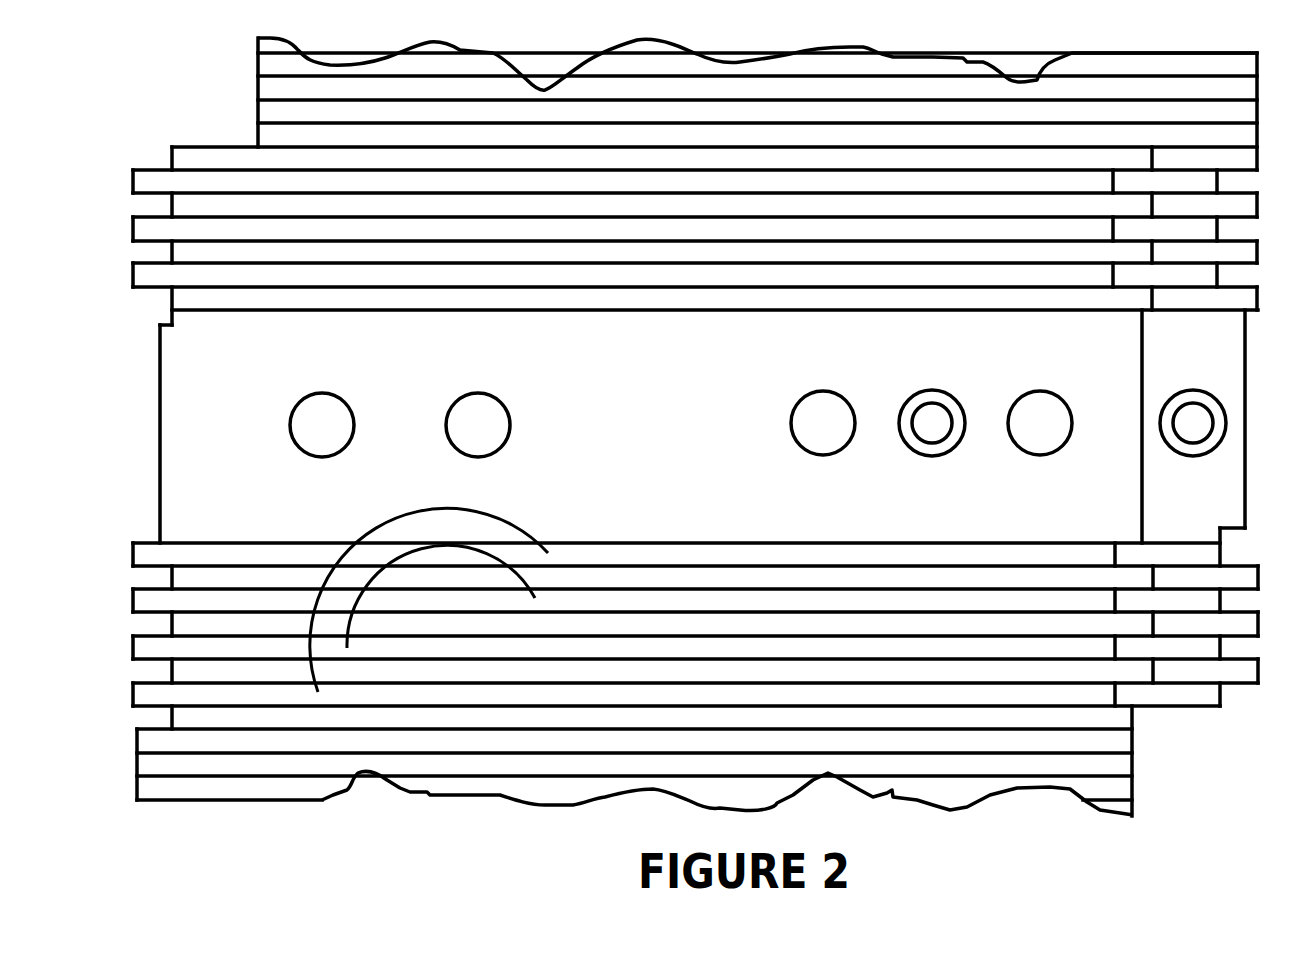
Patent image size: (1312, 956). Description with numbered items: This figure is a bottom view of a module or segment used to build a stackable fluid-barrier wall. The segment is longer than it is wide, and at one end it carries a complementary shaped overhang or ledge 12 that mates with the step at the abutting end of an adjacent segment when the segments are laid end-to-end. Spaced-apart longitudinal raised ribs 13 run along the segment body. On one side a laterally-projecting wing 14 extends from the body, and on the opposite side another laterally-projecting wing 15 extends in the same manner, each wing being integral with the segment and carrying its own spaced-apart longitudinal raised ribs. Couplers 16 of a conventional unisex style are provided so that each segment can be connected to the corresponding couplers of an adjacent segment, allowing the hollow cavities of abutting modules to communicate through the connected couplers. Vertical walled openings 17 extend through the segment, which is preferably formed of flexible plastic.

The overhang or ledge 12 is at (1212, 340).
The longitudinal raised ribs 13 is at (429, 596).
The laterally-projecting wing 14 is at (527, 78).
The laterally-projecting wing 15 is at (828, 776).
The couplers 16 is at (931, 405).
The vertical walled openings 17 is at (453, 415).